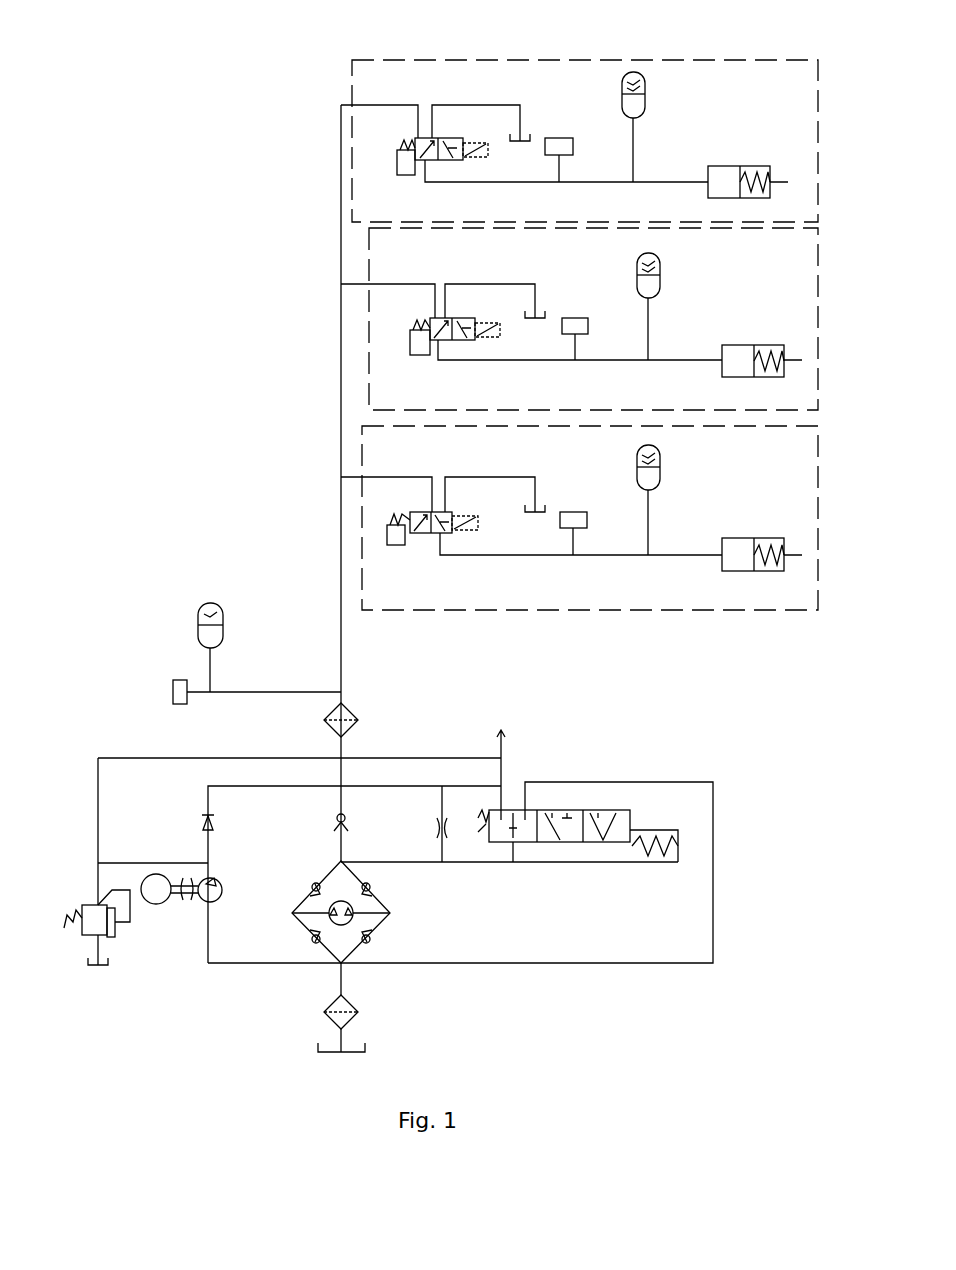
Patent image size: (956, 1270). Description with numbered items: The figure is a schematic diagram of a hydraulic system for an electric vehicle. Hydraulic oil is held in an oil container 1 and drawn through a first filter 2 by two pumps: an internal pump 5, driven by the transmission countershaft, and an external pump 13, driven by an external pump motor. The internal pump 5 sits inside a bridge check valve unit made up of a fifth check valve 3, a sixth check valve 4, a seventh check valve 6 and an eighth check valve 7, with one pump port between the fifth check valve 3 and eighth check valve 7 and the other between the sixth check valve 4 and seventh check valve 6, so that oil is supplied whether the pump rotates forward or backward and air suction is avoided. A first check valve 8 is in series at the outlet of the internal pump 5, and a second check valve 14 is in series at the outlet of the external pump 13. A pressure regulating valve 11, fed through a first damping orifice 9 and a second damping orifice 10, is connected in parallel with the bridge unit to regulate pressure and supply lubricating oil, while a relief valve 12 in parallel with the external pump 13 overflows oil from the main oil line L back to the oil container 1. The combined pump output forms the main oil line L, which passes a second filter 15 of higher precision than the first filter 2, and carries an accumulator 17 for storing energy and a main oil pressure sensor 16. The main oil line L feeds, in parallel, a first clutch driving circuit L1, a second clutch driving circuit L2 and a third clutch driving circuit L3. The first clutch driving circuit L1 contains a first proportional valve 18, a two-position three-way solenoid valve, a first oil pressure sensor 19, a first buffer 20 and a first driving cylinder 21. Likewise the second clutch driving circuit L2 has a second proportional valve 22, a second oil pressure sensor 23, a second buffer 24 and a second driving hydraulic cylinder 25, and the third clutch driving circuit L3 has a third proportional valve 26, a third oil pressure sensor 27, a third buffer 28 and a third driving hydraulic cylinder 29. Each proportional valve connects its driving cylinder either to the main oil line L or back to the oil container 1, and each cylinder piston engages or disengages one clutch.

The oil container 1 is at (350, 1047).
The first filter 2 is at (348, 1010).
The fifth check valve 3 is at (370, 942).
The sixth check valve 4 is at (312, 940).
The internal pump 5 is at (330, 910).
The seventh check valve 6 is at (314, 884).
The eighth check valve 7 is at (368, 888).
The first check valve 8 is at (345, 826).
The first damping orifice 9 is at (437, 826).
The second damping orifice 10 is at (588, 862).
The pressure regulating valve 11 is at (585, 842).
The relief valve 12 is at (83, 930).
The external pump 13 is at (206, 898).
The second check valve 14 is at (215, 822).
The second filter 15 is at (325, 720).
The main oil pressure sensor 16 is at (178, 695).
The accumulator 17 is at (198, 633).
The first proportional valve 18 is at (435, 528).
The first oil pressure sensor 19 is at (570, 512).
The first buffer 20 is at (652, 478).
The first driving cylinder 21 is at (725, 570).
The second proportional valve 22 is at (433, 333).
The second oil pressure sensor 23 is at (570, 322).
The second buffer 24 is at (652, 285).
The second driving hydraulic cylinder 25 is at (725, 376).
The third proportional valve 26 is at (423, 150).
The third oil pressure sensor 27 is at (558, 142).
The third buffer 28 is at (637, 108).
The third driving hydraulic cylinder 29 is at (710, 197).
The main oil line L is at (341, 445).
The first clutch driving circuit L1 is at (803, 510).
The second clutch driving circuit L2 is at (802, 313).
The third clutch driving circuit L3 is at (720, 93).